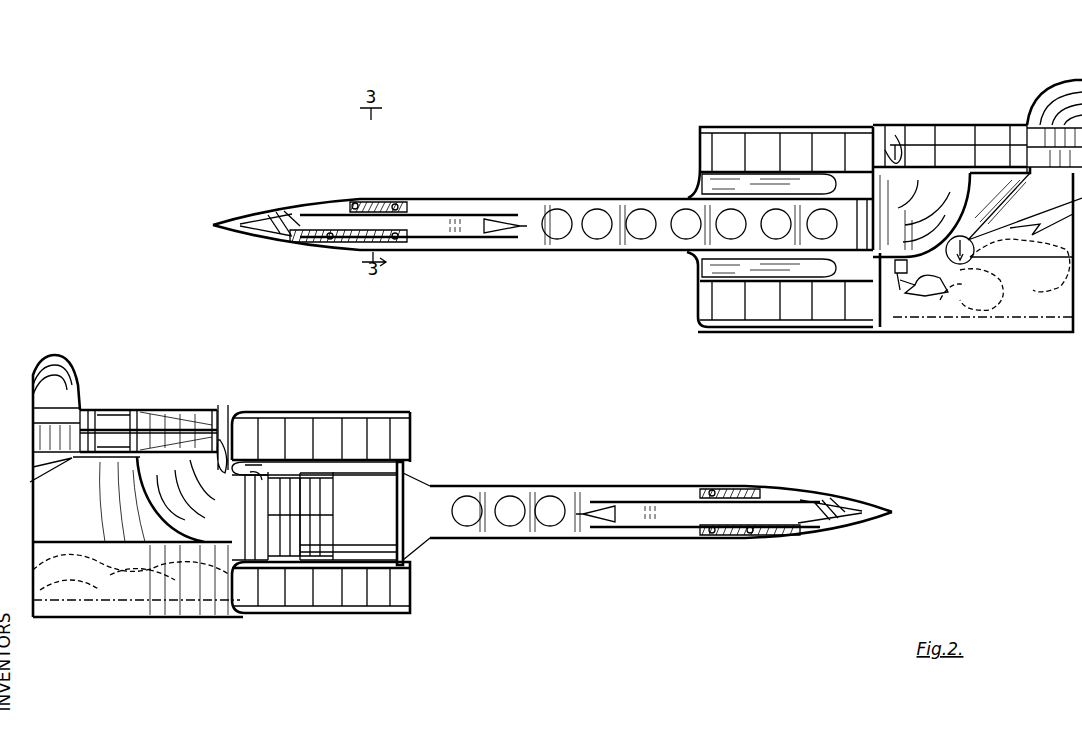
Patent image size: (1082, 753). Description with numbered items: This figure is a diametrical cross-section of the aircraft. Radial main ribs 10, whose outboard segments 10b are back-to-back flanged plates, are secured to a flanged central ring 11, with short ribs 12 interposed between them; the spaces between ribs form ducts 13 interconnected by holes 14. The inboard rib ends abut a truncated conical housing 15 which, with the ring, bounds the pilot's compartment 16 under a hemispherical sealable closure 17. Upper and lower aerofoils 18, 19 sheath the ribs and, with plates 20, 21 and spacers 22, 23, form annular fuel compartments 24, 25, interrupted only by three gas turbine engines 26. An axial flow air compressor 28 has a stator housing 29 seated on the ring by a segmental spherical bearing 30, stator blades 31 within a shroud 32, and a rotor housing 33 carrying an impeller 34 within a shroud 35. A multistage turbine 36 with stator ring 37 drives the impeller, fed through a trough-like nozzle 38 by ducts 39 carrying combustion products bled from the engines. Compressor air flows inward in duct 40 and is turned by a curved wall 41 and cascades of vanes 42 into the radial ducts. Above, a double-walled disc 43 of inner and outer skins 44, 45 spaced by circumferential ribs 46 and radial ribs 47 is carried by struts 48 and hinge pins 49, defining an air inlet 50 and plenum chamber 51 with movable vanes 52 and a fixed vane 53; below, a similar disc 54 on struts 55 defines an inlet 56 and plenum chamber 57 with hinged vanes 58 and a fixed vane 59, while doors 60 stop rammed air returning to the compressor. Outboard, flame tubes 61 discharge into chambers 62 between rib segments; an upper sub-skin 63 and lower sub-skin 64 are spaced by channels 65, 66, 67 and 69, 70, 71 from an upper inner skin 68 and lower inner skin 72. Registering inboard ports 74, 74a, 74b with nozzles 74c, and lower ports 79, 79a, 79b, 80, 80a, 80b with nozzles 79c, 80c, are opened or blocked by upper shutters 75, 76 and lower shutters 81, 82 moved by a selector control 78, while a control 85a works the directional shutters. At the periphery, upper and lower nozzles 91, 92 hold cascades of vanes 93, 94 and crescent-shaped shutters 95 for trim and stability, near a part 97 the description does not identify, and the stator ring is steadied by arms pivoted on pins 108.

The main ribs 10 is at (185, 520).
The outboard segments of the main ribs 10b is at (235, 222).
The flanged central ring 11 is at (1028, 130).
The short ribs 12 is at (572, 492).
The ducts 13 is at (480, 250).
The holes 14 is at (597, 228).
The truncated conical housing 15 is at (1020, 255).
The pilot's compartment 16 is at (1045, 305).
The hemispherical sealable closure 17 is at (1040, 100).
The upper skin 18 is at (492, 199).
The lower skin 19 is at (455, 251).
The plate 20 is at (780, 142).
The plate 21 is at (700, 325).
The spacers 22 is at (745, 180).
The spacers 23 is at (760, 278).
The fuel compartment 24 is at (815, 182).
The fuel compartment 25 is at (710, 265).
The axial flow gas turbine engines 26 is at (370, 499).
The axial flow air compressor 28 is at (148, 393).
The annular stator housing 29 is at (1005, 150).
The segmental spherical bearing 30 is at (80, 410).
The stator blades 31 is at (912, 150).
The shroud 32 is at (900, 150).
The rotor housing 33 is at (995, 145).
The impeller 34 is at (925, 130).
The shroud 35 is at (890, 130).
The multistage axial flow turbine 36 is at (225, 410).
The stator ring 37 is at (235, 450).
The trough-like nozzle 38 is at (205, 440).
The ducts 39 is at (378, 470).
The duct 40 is at (195, 560).
The circumferential curved wall 41 is at (160, 530).
The cascades of vanes 42 is at (925, 200).
The double-walled annular disc 43 is at (780, 125).
The inner skin 44 is at (790, 123).
The outer skin 45 is at (720, 150).
The circumferential ribs 46 is at (300, 435).
The radial ribs 47 is at (712, 127).
The struts 48 is at (865, 140).
The hinge pins 49 is at (695, 150).
The circumferential air inlet 50 is at (700, 160).
The plenum chamber 51 is at (710, 158).
The freely movable vanes 52 is at (700, 170).
The fixed circumferential vane 53 is at (843, 175).
The double-walled disc 54 is at (712, 330).
The struts 55 is at (870, 252).
The circumferential inlet 56 is at (705, 285).
The plenum chamber 57 is at (780, 310).
The hinged vanes 58 is at (740, 292).
The fixed circumferential vane 59 is at (845, 270).
The doors 60 is at (860, 255).
The flame tubes 61 is at (450, 220).
The chambers 62 is at (318, 212).
The upper sub-skin 63 is at (320, 205).
The lower sub-skin 64 is at (285, 241).
The channel 65 is at (290, 215).
The channel 66 is at (348, 202).
The channel 67 is at (405, 210).
The upper inner skin 68 is at (300, 207).
The channel 69 is at (290, 233).
The channel 70 is at (340, 241).
The channel 71 is at (405, 233).
The lower inner skin 72 is at (408, 232).
The inboard ports 74 is at (362, 206).
The inboard ports 74a is at (373, 205).
The inboard ports 74b is at (382, 204).
The nozzles 74c is at (378, 208).
The upper shutters 75 is at (305, 210).
The upper shutters 76 is at (398, 207).
The selector control 78 is at (903, 300).
The outboard ports 79 is at (300, 244).
The outboard ports 79a is at (300, 236).
The outboard ports 79b is at (315, 240).
The nozzles 79c is at (330, 238).
The inboard ports 80 is at (390, 241).
The inboard ports 80a is at (722, 537).
The inboard ports 80b is at (700, 526).
The nozzles 80c is at (740, 537).
The lower shutters 81 is at (345, 244).
The lower shutters 82 is at (392, 238).
The control 85a is at (925, 300).
The upper nozzles 91 is at (268, 218).
The lower nozzles 92 is at (270, 238).
The cascades of vanes 93 is at (283, 213).
The cascades of vanes 94 is at (268, 243).
The crescent shaped shutters 95 is at (270, 212).
The washer 97 is at (280, 236).
The pins 108 is at (862, 165).